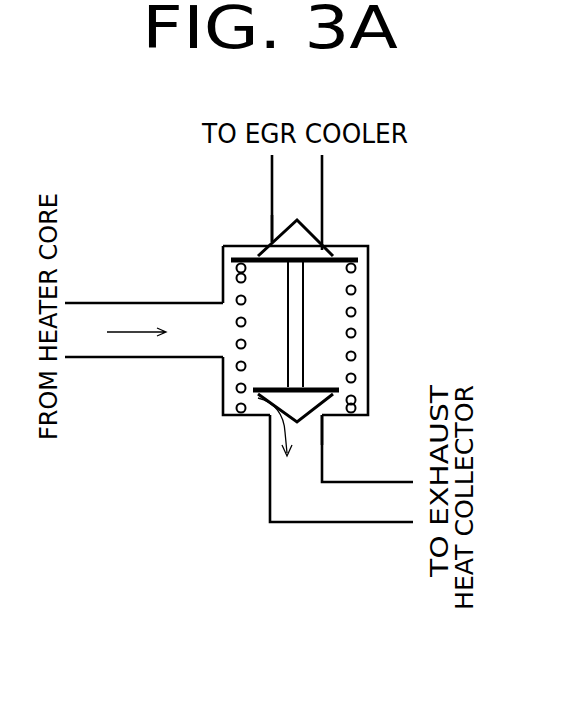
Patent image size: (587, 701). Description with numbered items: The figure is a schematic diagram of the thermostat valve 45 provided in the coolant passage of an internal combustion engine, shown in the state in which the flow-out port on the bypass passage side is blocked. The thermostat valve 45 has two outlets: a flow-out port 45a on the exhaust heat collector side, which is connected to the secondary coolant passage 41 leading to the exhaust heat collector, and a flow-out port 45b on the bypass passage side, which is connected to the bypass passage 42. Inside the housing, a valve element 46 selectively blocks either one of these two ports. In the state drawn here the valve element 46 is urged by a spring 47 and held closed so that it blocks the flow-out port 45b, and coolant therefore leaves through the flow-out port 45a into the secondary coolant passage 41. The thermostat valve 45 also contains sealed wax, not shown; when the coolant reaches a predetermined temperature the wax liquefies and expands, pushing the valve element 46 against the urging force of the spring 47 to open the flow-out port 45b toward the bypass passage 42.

The secondary coolant passage 41 is at (141, 357).
The bypass passage 42 is at (322, 177).
The thermostat valve 45 is at (377, 254).
The flow-out port on the exhaust heat collector side 45a is at (322, 418).
The flow-out port on the bypass passage side 45b is at (272, 222).
The valve element 46 is at (304, 278).
The spring 47 is at (356, 333).